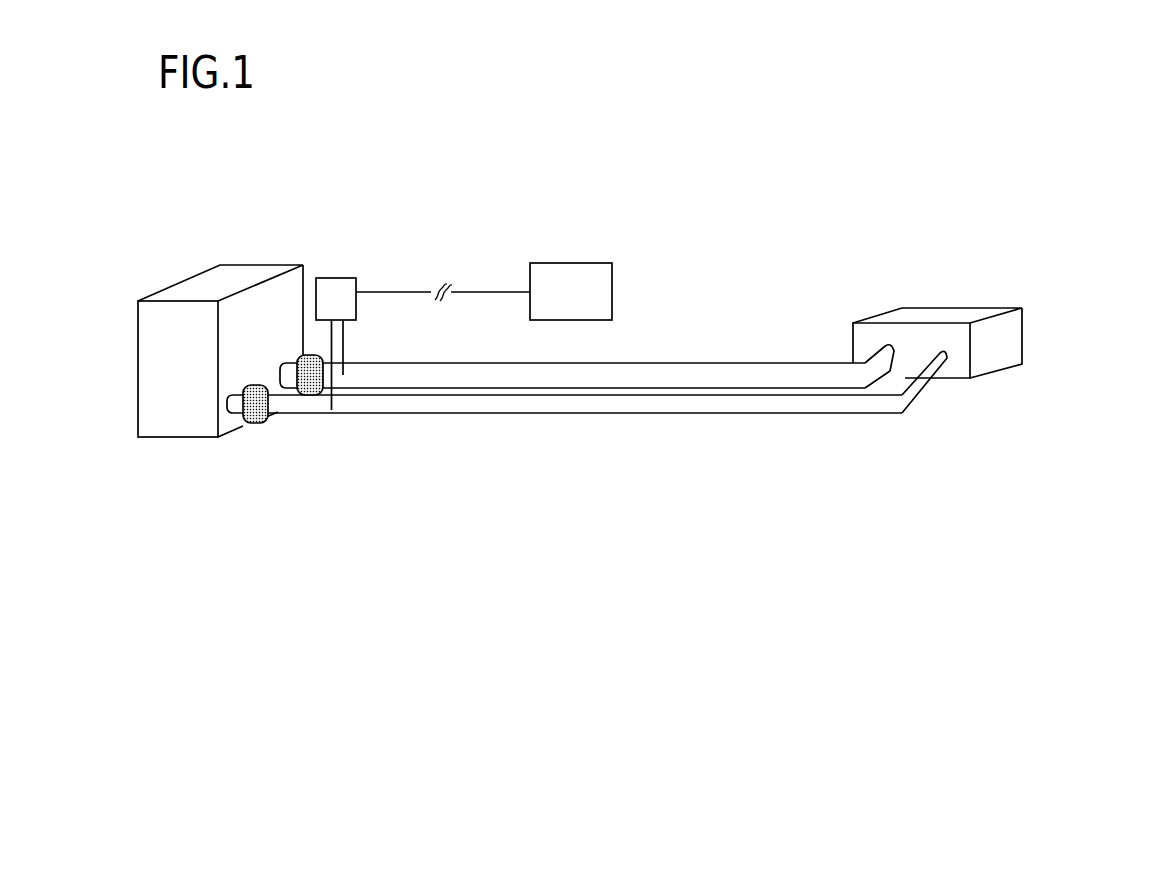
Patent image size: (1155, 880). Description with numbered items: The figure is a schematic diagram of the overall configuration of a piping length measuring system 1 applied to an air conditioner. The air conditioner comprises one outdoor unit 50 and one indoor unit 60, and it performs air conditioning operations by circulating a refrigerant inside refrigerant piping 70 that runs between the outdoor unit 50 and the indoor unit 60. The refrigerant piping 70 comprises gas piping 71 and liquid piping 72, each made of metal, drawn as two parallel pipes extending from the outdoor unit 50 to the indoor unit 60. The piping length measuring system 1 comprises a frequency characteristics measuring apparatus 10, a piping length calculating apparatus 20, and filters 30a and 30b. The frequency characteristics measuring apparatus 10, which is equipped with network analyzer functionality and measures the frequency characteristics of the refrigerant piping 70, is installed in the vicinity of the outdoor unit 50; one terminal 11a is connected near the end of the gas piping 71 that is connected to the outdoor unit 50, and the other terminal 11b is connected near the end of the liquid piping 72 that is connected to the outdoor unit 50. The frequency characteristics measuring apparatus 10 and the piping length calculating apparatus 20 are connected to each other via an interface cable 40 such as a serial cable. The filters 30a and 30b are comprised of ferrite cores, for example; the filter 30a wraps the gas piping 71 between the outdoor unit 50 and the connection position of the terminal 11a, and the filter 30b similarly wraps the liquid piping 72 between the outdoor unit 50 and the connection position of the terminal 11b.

The piping length measuring system 1 is at (735, 165).
The frequency characteristics measuring apparatus 10 is at (510, 277).
The terminal 11a is at (345, 332).
The terminal 11b is at (347, 356).
The piping length calculating apparatus 20 is at (570, 263).
The filter 30a is at (313, 395).
The filter 30b is at (262, 423).
The interface cable 40 is at (477, 292).
The outdoor unit 50 is at (160, 288).
The indoor unit 60 is at (925, 307).
The refrigerant piping 70 is at (587, 412).
The gas piping 71 is at (397, 363).
The liquid piping 72 is at (530, 413).